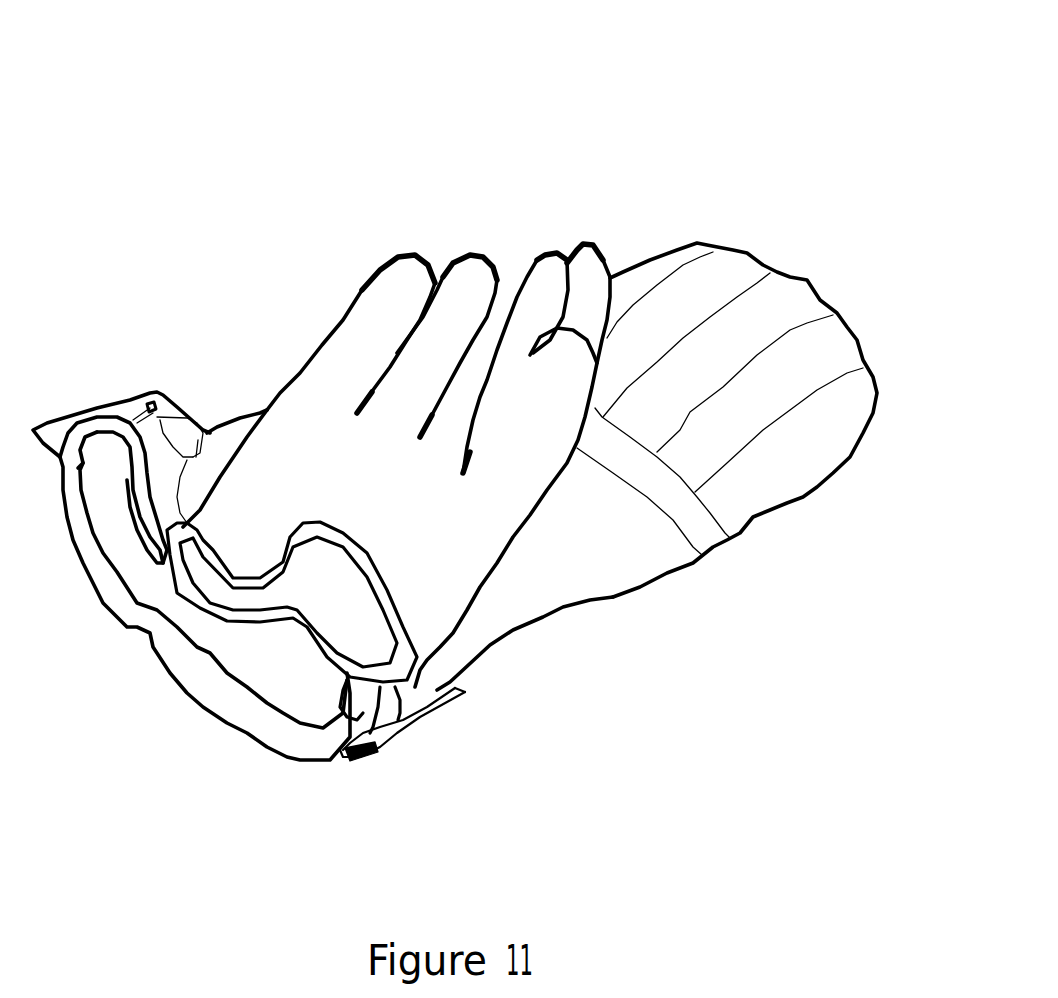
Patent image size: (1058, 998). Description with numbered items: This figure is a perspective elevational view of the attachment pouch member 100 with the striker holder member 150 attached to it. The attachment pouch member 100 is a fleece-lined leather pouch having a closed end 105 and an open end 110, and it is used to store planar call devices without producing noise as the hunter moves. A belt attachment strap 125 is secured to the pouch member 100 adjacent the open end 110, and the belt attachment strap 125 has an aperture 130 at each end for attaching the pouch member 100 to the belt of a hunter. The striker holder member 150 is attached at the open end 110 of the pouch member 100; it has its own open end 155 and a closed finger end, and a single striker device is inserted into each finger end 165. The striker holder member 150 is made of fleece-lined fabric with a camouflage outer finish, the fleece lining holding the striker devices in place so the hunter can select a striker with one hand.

The attachment pouch member 100 is at (757, 453).
The closed end 105 is at (810, 280).
The open end 110 is at (127, 547).
The belt attachment strap 125 is at (80, 403).
The aperture 130 is at (150, 403).
The striker holder member 150 is at (498, 490).
The open end 155 is at (337, 607).
The finger end 165 is at (415, 252).